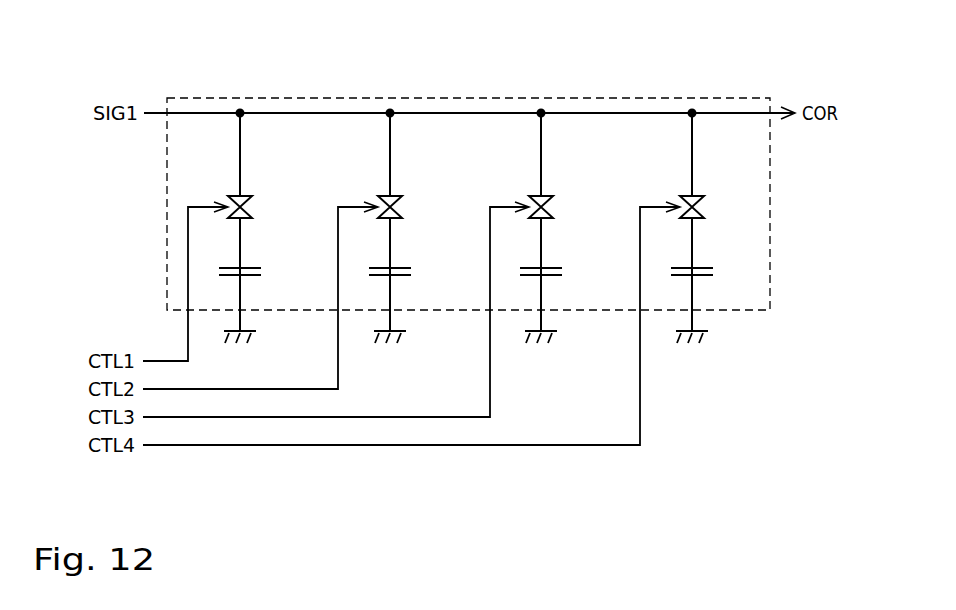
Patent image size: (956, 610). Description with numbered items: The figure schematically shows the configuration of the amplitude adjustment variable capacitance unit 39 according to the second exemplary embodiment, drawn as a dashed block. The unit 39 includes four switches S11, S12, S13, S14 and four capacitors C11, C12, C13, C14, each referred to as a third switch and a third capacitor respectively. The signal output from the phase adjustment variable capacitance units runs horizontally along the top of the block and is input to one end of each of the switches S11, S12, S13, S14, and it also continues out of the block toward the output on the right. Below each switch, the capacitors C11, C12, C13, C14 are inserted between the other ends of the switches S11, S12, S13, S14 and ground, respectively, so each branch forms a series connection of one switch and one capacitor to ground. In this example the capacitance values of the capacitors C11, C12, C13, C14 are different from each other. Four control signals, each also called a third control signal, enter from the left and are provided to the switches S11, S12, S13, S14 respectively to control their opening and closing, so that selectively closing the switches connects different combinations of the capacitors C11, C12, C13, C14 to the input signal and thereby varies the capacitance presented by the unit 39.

The amplitude adjustment variable capacitance unit 39 is at (628, 97).
The switch S11 is at (265, 207).
The switch S12 is at (415, 207).
The switch S13 is at (566, 207).
The switch S14 is at (717, 207).
The capacitor C11 is at (259, 274).
The capacitor C12 is at (409, 274).
The capacitor C13 is at (560, 274).
The capacitor C14 is at (711, 274).